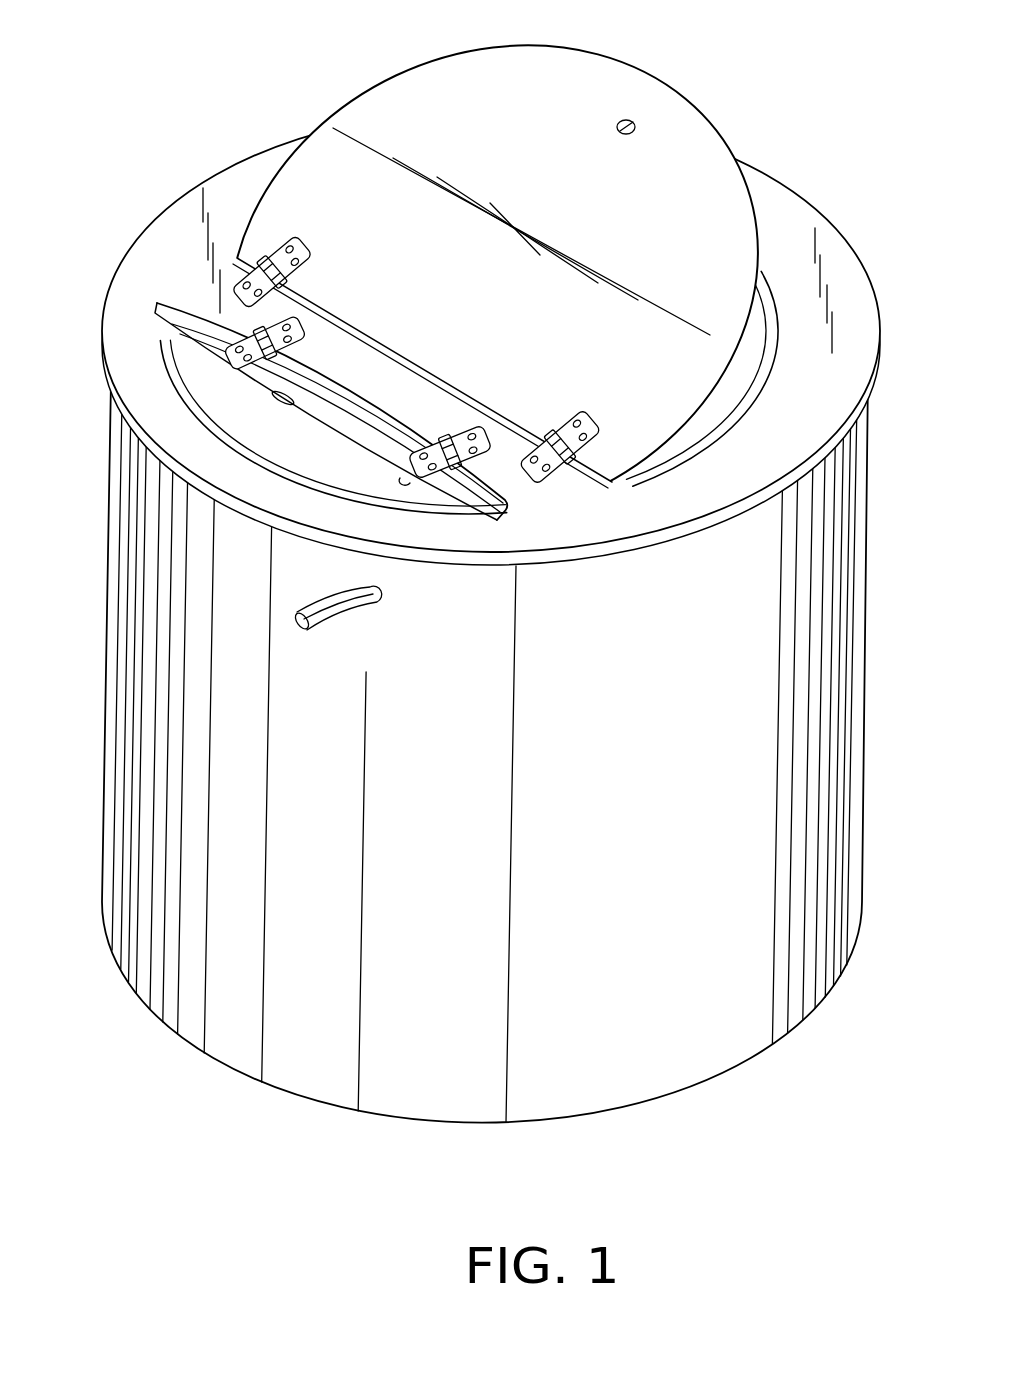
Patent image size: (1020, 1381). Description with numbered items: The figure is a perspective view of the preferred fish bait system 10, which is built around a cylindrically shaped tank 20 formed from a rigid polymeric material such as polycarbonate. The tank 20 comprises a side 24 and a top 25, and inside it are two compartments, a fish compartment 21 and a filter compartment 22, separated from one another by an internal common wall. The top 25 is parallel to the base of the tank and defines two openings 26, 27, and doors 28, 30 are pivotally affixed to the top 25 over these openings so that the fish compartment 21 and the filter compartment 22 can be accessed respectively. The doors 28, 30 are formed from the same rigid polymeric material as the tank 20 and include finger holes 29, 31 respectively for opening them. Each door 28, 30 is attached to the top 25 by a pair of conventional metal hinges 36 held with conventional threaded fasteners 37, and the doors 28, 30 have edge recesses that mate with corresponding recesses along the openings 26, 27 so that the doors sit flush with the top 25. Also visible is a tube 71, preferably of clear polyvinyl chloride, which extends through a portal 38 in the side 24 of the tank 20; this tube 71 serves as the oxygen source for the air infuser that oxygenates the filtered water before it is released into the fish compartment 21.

The fish bait system 10 is at (452, 561).
The tank 20 is at (452, 616).
The fish compartment 21 is at (752, 372).
The filter compartment 22 is at (218, 408).
The side 24 is at (587, 688).
The top 25 is at (602, 520).
The opening 26 is at (698, 422).
The opening 27 is at (324, 468).
The door 28 is at (440, 77).
The finger hole 29 is at (606, 127).
The door 30 is at (157, 300).
The finger hole 31 is at (277, 402).
The hinges 36 is at (282, 320).
The threaded fasteners 37 is at (575, 417).
The portal 38 is at (396, 604).
The tube 71 is at (320, 602).